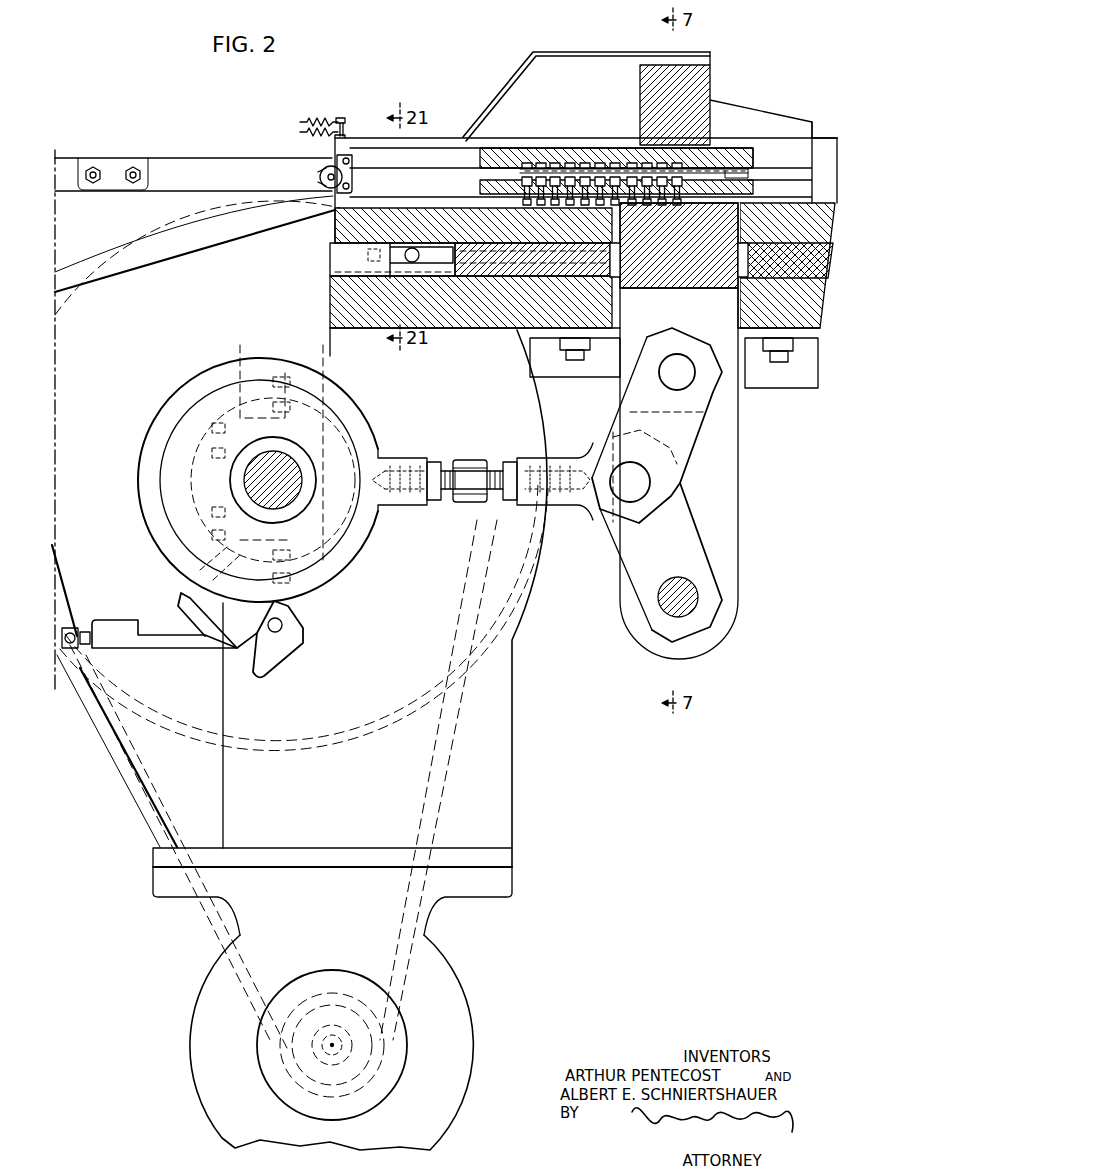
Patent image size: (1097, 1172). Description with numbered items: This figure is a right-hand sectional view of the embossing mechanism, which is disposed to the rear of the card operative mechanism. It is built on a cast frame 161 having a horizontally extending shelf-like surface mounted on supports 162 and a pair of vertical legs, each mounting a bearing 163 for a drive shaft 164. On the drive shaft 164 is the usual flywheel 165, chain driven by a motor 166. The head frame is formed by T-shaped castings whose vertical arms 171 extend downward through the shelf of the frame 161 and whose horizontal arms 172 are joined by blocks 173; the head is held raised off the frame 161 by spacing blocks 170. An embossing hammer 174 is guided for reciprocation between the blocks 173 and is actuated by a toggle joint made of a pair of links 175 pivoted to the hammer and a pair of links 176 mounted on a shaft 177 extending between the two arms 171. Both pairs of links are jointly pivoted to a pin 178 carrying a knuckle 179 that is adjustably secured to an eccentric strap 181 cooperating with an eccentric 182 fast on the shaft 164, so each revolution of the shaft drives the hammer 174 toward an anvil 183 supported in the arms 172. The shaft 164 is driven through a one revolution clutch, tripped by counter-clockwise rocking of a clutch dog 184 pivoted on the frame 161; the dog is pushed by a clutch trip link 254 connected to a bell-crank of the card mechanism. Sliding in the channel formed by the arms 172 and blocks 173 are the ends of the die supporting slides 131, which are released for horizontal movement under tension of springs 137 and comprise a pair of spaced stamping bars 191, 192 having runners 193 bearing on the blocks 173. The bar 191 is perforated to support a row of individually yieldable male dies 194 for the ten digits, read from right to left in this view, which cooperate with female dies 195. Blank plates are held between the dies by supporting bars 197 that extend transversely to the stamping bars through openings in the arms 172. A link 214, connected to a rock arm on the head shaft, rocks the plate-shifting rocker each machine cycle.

The differentially settable slide 131 is at (206, 157).
The spring 137 is at (303, 120).
The frame 161 is at (345, 299).
The support 162 is at (802, 368).
The bearing 163 is at (273, 452).
The drive shaft 164 is at (287, 466).
The flywheel 165 is at (407, 718).
The motor 166 is at (462, 1080).
The spacing block 170 is at (768, 268).
The vertical arm 171 is at (729, 467).
The horizontal arm 172 is at (580, 99).
The block 173 is at (410, 216).
The embossing hammer 174 is at (679, 278).
The link 175 is at (687, 421).
The link 176 is at (678, 538).
The shaft 177 is at (686, 590).
The pin 178 is at (642, 486).
The knuckle 179 is at (582, 496).
The eccentric strap 181 is at (366, 508).
The eccentric 182 is at (332, 548).
The anvil 183 is at (712, 122).
The clutch dog 184 is at (290, 635).
The stamping bar 191 is at (428, 186).
The stamping bar 192 is at (470, 156).
The runner 193 is at (778, 205).
The male die 194 is at (480, 184).
The female die 195 is at (629, 170).
The supporting bar 197 is at (601, 166).
The link 214 is at (202, 247).
The clutch trip link 254 is at (63, 614).